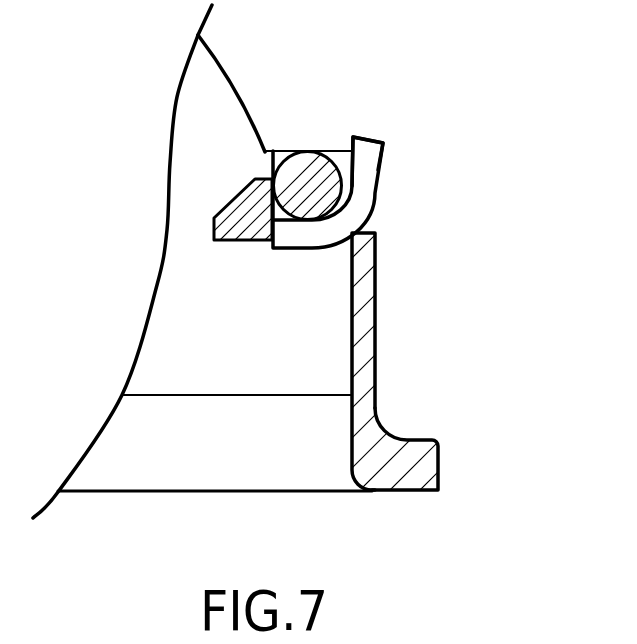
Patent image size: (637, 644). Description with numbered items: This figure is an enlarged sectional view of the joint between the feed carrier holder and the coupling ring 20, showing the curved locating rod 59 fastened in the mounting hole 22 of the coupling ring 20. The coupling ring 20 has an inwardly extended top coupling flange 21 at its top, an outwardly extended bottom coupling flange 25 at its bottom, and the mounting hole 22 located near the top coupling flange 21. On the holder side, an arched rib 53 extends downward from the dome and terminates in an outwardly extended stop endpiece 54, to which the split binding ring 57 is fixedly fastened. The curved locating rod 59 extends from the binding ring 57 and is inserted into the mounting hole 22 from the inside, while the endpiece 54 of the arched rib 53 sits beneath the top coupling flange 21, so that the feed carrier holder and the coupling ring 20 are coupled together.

The coupling ring 20 is at (431, 330).
The top coupling flange 21 is at (318, 165).
The mounting hole 22 is at (373, 215).
The bottom coupling flange 25 is at (465, 449).
The arched rib 53 is at (197, 120).
The stop endpiece 54 is at (335, 318).
The split binding ring 57 is at (258, 190).
The curved locating rod 59 is at (362, 162).